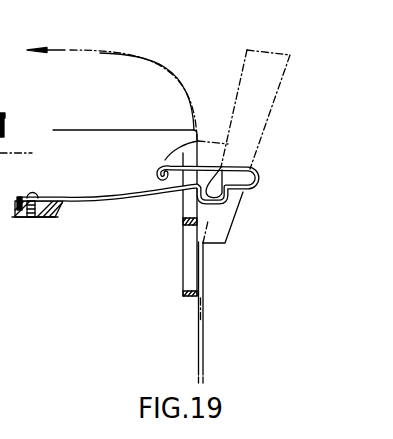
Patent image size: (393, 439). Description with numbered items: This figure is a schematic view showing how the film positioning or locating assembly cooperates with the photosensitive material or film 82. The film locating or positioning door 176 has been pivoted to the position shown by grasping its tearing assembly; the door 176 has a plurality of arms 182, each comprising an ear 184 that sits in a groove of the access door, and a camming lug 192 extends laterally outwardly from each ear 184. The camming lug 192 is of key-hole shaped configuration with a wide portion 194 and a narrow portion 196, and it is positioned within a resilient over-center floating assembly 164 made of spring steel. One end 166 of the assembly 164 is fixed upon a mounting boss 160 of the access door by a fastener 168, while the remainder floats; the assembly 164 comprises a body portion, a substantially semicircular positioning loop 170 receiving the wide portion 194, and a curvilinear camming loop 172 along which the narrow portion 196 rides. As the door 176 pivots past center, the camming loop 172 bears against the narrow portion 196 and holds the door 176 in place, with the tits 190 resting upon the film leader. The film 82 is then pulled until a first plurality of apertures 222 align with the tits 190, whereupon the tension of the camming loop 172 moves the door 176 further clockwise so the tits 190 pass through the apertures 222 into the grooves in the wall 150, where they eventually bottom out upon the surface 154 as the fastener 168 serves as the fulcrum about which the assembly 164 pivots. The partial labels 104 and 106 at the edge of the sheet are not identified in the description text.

The photosensitive material or film 82 is at (203, 363).
The base 104 is at (31, 187).
The direction arrow 106 is at (98, 94).
The wall 150 is at (192, 298).
The surface 154 is at (195, 244).
The mounting boss 160 is at (62, 197).
The resilient over-center floating assembly 164 is at (108, 210).
The end of floating assembly 166 is at (23, 196).
The fastener 168 is at (50, 208).
The positioning loop 170 is at (227, 200).
The camming loop 172 is at (159, 171).
The film locating or positioning door 176 is at (288, 103).
The arms 182 is at (264, 51).
The ear 184 is at (183, 168).
The tits 190 is at (208, 248).
The camming lug 192 is at (257, 164).
The wide portion 194 is at (246, 192).
The narrow portion 196 is at (221, 160).
The apertures 222 is at (204, 311).